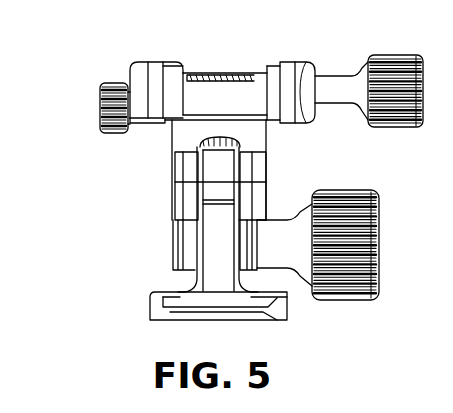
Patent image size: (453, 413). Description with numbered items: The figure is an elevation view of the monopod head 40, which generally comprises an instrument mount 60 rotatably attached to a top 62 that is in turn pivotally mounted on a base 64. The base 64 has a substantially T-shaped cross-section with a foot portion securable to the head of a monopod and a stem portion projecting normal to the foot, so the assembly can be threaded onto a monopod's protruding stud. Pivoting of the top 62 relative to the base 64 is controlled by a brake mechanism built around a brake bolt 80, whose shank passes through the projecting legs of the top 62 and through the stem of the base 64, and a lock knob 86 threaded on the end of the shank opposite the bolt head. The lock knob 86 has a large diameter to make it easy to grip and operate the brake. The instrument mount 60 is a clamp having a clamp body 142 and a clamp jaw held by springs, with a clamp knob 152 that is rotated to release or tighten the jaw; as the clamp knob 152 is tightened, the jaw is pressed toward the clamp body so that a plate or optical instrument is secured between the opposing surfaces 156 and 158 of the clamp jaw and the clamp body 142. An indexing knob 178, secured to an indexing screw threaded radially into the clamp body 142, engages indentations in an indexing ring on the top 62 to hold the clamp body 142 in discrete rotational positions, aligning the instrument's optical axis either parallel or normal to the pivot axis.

The monopod head 40 is at (77, 256).
The instrument mount 60 is at (124, 62).
The top 62 is at (168, 150).
The base 64 is at (148, 302).
The brake bolt 80 is at (170, 240).
The lock knob 86 is at (383, 195).
The clamp body 142 is at (188, 72).
The clamp knob 152 is at (398, 54).
The opposing surface of the clamp jaw 156 is at (263, 72).
The surface of the clamp body 158 is at (173, 70).
The indexing knob 178 is at (100, 127).